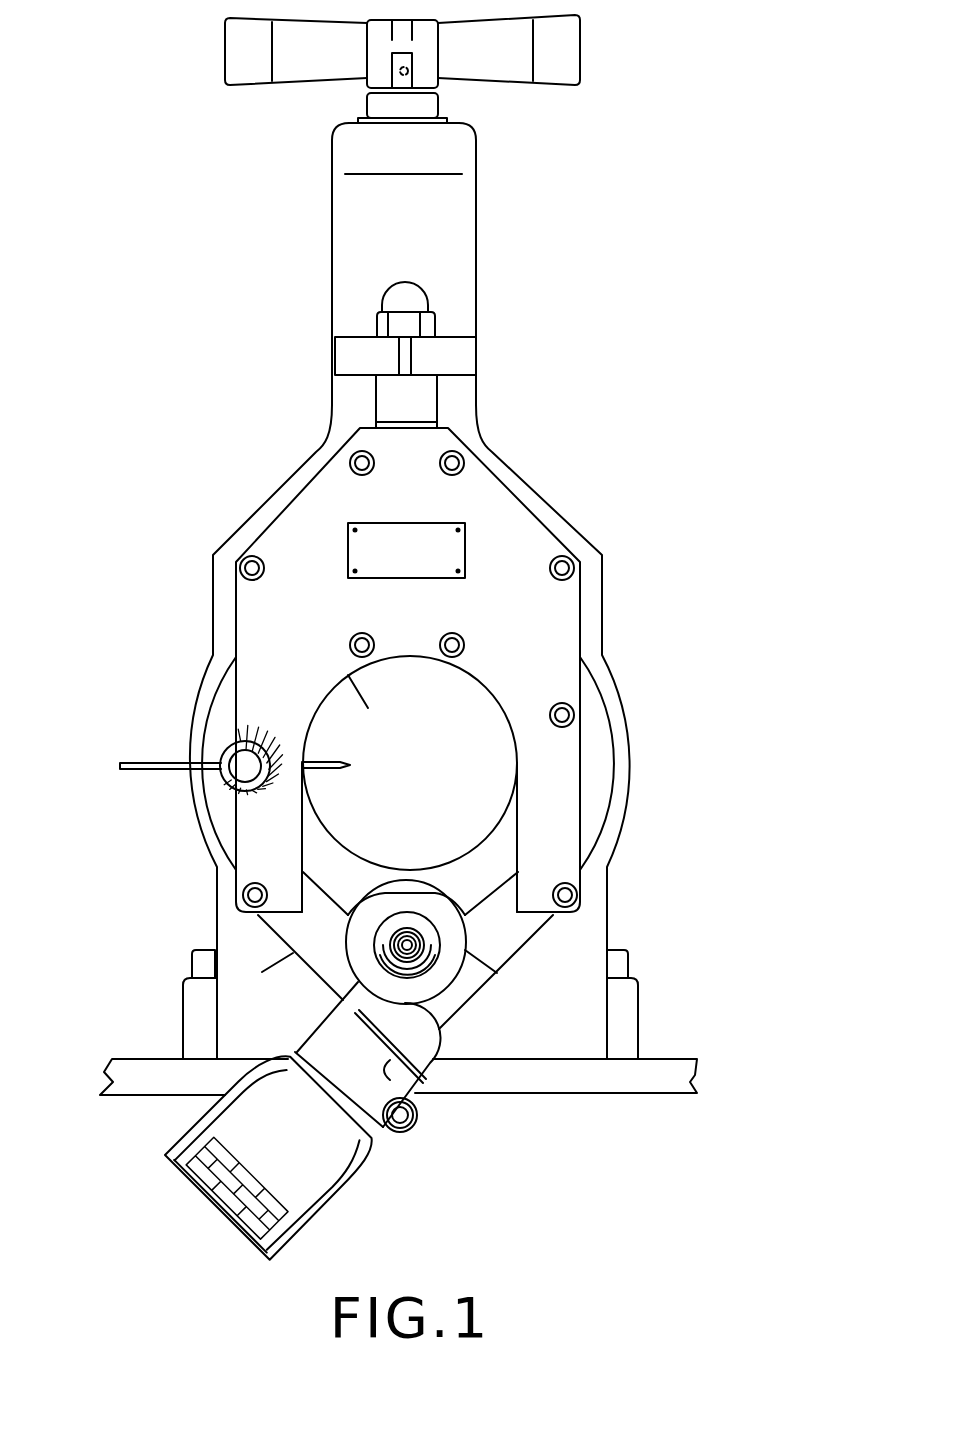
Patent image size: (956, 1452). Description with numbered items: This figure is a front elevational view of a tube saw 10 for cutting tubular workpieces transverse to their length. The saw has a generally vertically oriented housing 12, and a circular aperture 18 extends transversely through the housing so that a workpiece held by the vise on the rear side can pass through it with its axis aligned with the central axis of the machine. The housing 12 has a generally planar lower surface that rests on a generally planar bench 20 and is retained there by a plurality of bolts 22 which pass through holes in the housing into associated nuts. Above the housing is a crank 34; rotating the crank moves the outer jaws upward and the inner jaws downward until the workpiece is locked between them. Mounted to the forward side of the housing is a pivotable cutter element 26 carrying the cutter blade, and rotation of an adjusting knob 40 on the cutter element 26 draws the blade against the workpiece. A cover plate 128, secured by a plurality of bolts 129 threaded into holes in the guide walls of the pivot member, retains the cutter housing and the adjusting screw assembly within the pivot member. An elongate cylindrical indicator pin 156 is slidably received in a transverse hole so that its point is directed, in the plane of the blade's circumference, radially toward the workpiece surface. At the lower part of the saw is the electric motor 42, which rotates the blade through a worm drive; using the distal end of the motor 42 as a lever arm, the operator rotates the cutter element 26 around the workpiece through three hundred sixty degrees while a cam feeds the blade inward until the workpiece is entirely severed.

The tube saw 10 is at (258, 285).
The housing 12 is at (480, 410).
The crank 34 is at (243, 87).
The adjusting knob 40 is at (352, 375).
The cover plate 128 is at (262, 620).
The bolts 129 is at (240, 562).
The circular aperture 18 is at (368, 708).
The indicator pin 156 is at (128, 768).
The cutter element 26 is at (262, 972).
The bolts 22 is at (628, 952).
The bench 20 is at (140, 1060).
The electric motor 42 is at (337, 1200).